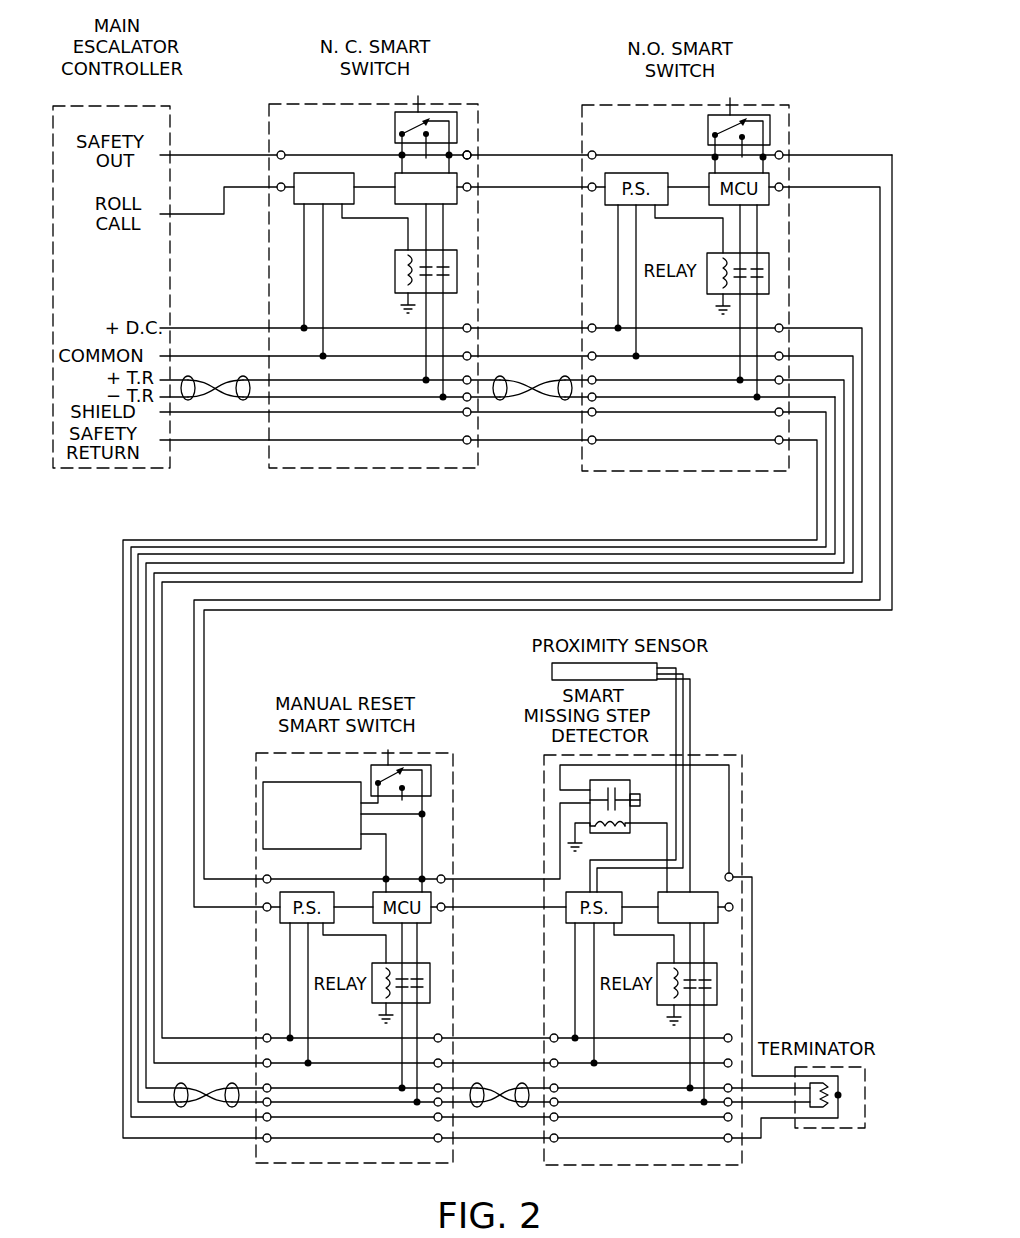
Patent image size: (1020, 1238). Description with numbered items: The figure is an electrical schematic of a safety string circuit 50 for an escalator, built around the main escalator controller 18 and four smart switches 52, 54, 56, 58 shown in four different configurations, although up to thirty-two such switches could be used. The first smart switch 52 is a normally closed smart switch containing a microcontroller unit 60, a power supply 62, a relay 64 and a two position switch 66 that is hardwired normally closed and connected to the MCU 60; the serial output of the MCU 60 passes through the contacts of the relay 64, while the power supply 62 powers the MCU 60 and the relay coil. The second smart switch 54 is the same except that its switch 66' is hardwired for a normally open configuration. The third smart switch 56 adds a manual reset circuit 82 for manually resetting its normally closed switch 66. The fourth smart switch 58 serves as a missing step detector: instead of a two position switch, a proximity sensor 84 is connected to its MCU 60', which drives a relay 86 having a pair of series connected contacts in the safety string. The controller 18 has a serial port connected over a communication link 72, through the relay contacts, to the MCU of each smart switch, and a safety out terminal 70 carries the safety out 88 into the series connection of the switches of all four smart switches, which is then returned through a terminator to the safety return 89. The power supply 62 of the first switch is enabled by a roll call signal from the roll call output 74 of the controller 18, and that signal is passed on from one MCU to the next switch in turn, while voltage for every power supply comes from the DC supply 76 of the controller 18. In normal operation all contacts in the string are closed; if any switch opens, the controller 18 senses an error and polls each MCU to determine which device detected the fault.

The safety string circuit 50 is at (495, 38).
The main escalator controller 18 is at (160, 113).
The first smart switch 52 is at (478, 108).
The second smart switch 54 is at (790, 127).
The third smart switch 56 is at (445, 788).
The fourth smart switch 58 is at (740, 762).
The microcontroller unit (MCU) 60 is at (451, 203).
The microcontroller unit of the missing step smart switch 60' is at (697, 879).
The power supply 62 is at (325, 173).
The relay 64 is at (458, 285).
The two position switch 66 is at (422, 476).
The switch 66' is at (762, 117).
The safety out terminal 70 is at (472, 155).
The communication link 72 is at (170, 380).
The roll call output 74 is at (172, 215).
The DC supply 76 is at (170, 328).
The manual reset circuit 82 is at (300, 782).
The proximity sensor 84 is at (660, 664).
The relay 86 is at (615, 792).
The safety out 88 is at (168, 155).
The safety return 89 is at (175, 441).